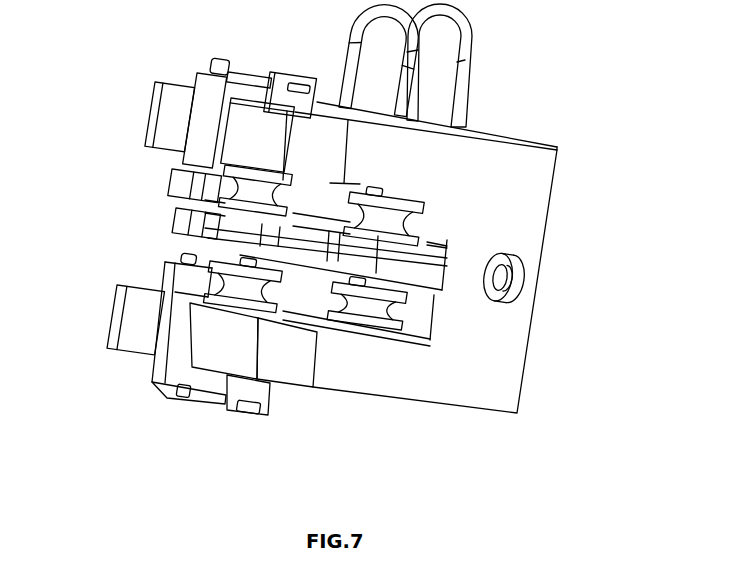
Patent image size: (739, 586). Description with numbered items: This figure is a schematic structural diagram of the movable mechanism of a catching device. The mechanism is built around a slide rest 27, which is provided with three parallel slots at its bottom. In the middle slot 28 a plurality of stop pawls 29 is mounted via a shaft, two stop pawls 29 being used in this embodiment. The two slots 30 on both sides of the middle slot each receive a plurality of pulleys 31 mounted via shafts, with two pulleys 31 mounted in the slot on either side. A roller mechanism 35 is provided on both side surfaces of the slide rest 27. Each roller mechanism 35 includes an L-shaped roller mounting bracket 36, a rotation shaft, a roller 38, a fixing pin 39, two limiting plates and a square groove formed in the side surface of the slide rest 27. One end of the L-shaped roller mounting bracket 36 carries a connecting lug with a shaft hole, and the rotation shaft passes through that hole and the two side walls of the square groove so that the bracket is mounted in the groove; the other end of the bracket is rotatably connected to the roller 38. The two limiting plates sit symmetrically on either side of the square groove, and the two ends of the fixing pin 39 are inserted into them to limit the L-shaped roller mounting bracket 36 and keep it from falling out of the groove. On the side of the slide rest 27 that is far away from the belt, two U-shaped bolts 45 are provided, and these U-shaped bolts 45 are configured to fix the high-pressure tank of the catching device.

The slide rest 27 is at (493, 218).
The middle slot 28 is at (435, 268).
The stop pawl 29 is at (200, 226).
The slot 30 is at (439, 210).
The pulley 31 is at (222, 283).
The roller mechanism 35 is at (213, 407).
The L-shaped roller mounting bracket 36 is at (195, 125).
The roller 38 is at (192, 180).
The fixing pin 39 is at (242, 71).
The U-shaped bolt 45 is at (465, 94).